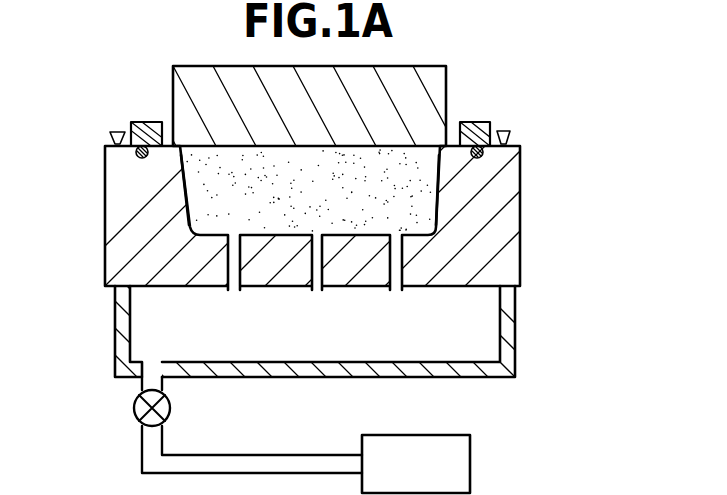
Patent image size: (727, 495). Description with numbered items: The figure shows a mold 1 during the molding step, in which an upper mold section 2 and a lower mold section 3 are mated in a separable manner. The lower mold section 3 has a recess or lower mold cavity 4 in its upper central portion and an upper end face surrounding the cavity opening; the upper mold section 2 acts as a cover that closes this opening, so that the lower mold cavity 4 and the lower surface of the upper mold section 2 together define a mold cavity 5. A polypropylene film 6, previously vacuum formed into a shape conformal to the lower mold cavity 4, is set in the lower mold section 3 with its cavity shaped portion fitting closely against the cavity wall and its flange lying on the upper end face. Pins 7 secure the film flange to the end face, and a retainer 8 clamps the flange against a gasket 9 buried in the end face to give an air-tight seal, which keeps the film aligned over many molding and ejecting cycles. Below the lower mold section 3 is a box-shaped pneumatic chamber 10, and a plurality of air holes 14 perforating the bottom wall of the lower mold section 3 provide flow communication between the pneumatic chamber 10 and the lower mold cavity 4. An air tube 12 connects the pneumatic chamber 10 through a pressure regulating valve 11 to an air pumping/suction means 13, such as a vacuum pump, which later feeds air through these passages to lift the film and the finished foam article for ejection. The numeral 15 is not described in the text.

The mold 1 is at (535, 112).
The upper mold section 2 is at (432, 87).
The lower mold section 3 is at (500, 202).
The lower mold cavity 4 is at (418, 185).
The mold cavity 5 is at (186, 185).
The film 6 is at (437, 212).
The pins 7 is at (117, 130).
The retainer 8 is at (143, 126).
The gasket 9 is at (137, 155).
The pneumatic chamber 10 is at (477, 322).
The pressure regulating valve 11 is at (134, 408).
The air tube 12 is at (150, 457).
The air pumping/suction means 13 is at (457, 455).
The air holes 14 is at (233, 285).
The cavity bottom corner 15 is at (197, 228).